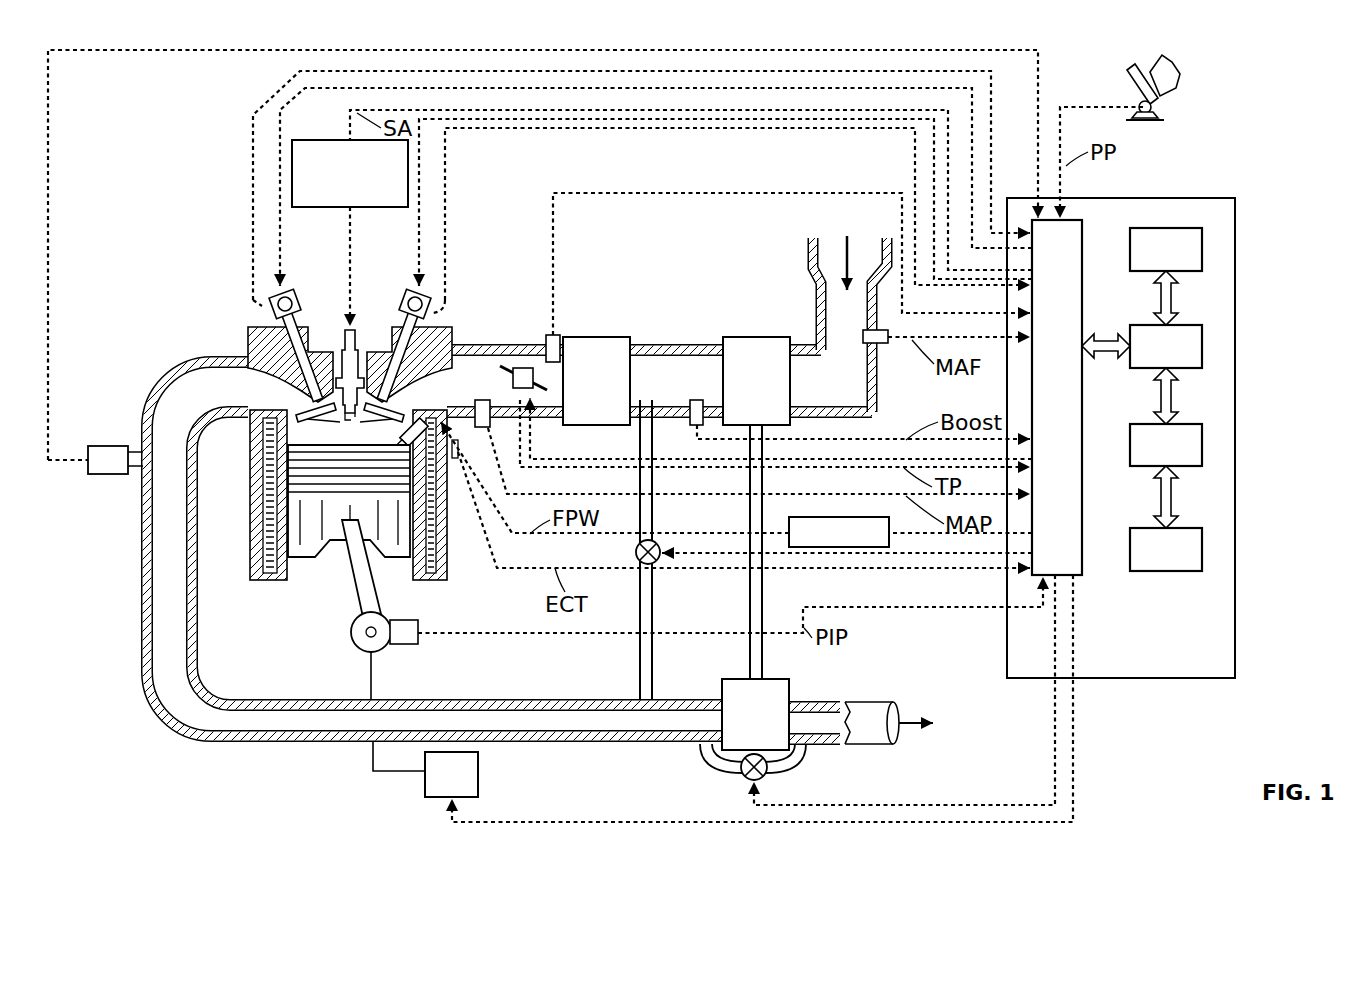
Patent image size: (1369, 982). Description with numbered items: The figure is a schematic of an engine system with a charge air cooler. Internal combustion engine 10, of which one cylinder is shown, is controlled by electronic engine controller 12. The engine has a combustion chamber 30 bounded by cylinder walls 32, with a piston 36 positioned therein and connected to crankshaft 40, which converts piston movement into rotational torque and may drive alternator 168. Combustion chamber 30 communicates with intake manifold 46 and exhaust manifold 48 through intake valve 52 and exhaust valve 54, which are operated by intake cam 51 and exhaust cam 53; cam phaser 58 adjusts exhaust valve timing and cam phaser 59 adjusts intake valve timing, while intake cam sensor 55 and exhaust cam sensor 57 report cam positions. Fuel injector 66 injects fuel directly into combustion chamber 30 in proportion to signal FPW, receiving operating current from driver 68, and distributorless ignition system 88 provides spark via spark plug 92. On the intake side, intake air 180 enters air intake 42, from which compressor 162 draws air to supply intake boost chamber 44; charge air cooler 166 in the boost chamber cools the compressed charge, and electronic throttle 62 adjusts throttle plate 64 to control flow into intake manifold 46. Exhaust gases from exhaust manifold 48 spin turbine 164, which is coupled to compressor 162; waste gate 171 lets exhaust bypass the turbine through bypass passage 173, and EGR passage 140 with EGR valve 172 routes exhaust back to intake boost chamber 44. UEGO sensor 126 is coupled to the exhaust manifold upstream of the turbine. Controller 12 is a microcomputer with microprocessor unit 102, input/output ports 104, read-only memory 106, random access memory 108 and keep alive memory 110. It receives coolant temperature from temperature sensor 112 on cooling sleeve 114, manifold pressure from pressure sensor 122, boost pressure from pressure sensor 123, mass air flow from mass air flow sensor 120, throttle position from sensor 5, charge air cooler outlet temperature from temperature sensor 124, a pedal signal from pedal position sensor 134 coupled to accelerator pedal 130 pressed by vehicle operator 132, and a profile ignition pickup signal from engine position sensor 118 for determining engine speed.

The internal combustion engine 10 is at (183, 280).
The electronic engine controller 12 is at (1169, 424).
The combustion chamber 30 is at (348, 425).
The cylinder walls 32 is at (292, 580).
The piston 36 is at (332, 558).
The crankshaft 40 is at (356, 645).
The air intake 42 is at (850, 325).
The intake boost chamber 44 is at (660, 534).
The intake manifold 46 is at (659, 381).
The exhaust manifold 48 is at (530, 553).
The intake cam 51 is at (382, 330).
The intake valve 52 is at (384, 372).
The exhaust cam 53 is at (298, 328).
The exhaust valve 54 is at (288, 378).
The intake cam sensor 55 is at (451, 298).
The exhaust cam sensor 57 is at (274, 326).
The cam phaser 58 is at (292, 294).
The cam phaser 59 is at (393, 325).
The electronic throttle 62 is at (522, 346).
The throttle plate 64 is at (515, 368).
The fuel injector 66 is at (420, 426).
The driver 68 is at (815, 518).
The distributorless ignition system 88 is at (306, 140).
The spark plug 92 is at (347, 360).
The microprocessor unit 102 is at (1204, 350).
The input/output ports 104 is at (1084, 232).
The read-only memory 106 is at (1204, 252).
The random access memory 108 is at (1204, 448).
The keep alive memory 110 is at (1204, 552).
The temperature sensor 112 is at (458, 462).
The cooling sleeve 114 is at (447, 545).
The engine position sensor 118 is at (405, 647).
The mass air flow sensor 120 is at (880, 344).
The pressure sensor 122 is at (486, 428).
The pressure sensor 123 is at (691, 426).
The temperature sensor 124 is at (556, 336).
The UEGO sensor 126 is at (92, 476).
The accelerator pedal 130 is at (1183, 87).
The vehicle operator 132 is at (1180, 68).
The pedal position sensor 134 is at (1170, 110).
The EGR passage 140 is at (640, 650).
The compressor 162 is at (756, 508).
The turbine 164 is at (755, 714).
The charge air cooler 166 is at (596, 381).
The alternator 168 is at (451, 774).
The waste gate 171 is at (744, 778).
The EGR valve 172 is at (636, 550).
The bypass passage 173 is at (790, 770).
The intake air 180 is at (845, 260).
The sensor 5 is at (490, 420).